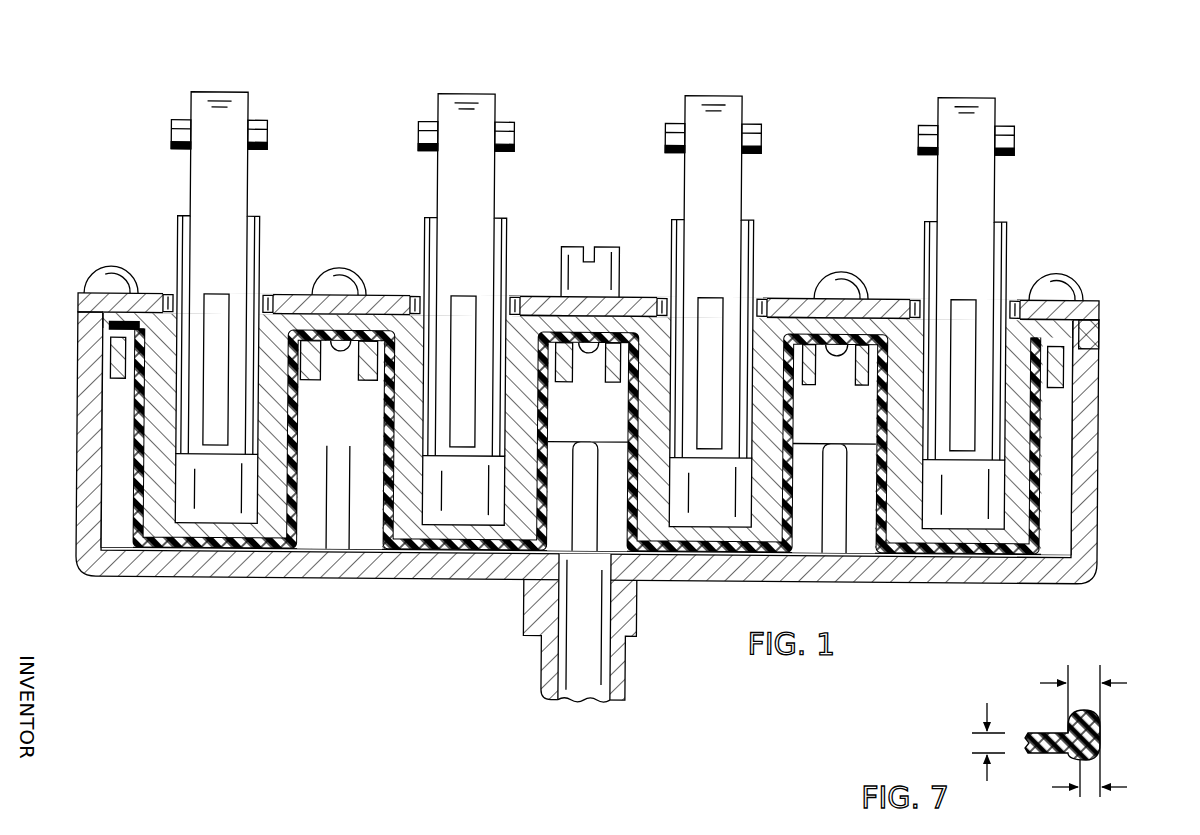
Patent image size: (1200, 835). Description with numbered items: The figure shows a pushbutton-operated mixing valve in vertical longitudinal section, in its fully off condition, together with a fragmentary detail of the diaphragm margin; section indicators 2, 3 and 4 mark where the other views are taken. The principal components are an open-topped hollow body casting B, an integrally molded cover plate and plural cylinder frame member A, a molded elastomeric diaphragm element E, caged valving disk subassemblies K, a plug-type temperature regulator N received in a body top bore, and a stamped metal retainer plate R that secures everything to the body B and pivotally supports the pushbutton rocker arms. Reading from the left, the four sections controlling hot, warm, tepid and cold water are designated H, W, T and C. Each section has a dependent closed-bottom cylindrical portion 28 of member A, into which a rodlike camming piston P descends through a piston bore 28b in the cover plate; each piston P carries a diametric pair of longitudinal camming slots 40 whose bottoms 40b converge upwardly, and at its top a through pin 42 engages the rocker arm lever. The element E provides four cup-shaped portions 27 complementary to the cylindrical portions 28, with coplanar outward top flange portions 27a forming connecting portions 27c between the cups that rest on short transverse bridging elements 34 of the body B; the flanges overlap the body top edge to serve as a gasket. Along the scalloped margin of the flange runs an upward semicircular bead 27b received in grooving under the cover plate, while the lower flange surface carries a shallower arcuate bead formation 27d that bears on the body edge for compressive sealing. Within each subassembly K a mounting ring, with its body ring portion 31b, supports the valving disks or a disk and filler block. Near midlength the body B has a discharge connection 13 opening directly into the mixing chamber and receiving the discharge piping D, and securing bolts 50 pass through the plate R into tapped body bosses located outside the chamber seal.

In FIG. 1, the cup-shaped diaphragm portion 27 is at (132, 572).
In FIG. 1, the outward top flange portion 27a is at (602, 290).
In FIG. 7, the outward top flange portion 27a is at (1040, 733).
In FIG. 1, the upward bead 27b is at (1100, 320).
In FIG. 7, the upward bead 27b is at (1090, 712).
In FIG. 1, the connecting portion 27c is at (1066, 350).
In FIG. 7, the arcuate bead formation 27d is at (1088, 762).
In FIG. 1, the cylindrical portion 28 is at (262, 548).
In FIG. 1, the piston bore 28b is at (228, 501).
In FIG. 1, the bridging element 34 is at (342, 354).
In FIG. 1, the camming slot 40 is at (220, 318).
In FIG. 1, the slot bottom 40b is at (954, 298).
In FIG. 1, the through pin 42 is at (172, 123).
In FIG. 1, the securing bolt 50 is at (336, 274).
In FIG. 1, the discharge connection 13 is at (639, 598).
In FIG. 1, the discharge piping D is at (629, 682).
In FIG. 1, the temperature regulator N is at (596, 243).
In FIG. 1, the camming piston P is at (248, 203).
In FIG. 1, the caged valving disk subassembly K is at (102, 361).
In FIG. 1, the body ring portion 31b is at (110, 382).
In FIG. 1, the cover plate and plural cylinder frame member A is at (1102, 311).
In FIG. 1, the hollow body casting B is at (1101, 407).
In FIG. 1, the elastomeric diaphragm element E is at (1048, 478).
In FIG. 1, the retainer plate R is at (867, 299).
In FIG. 1, the hot water section H is at (204, 62).
In FIG. 1, the warm water section W is at (444, 63).
In FIG. 1, the tepid water section T is at (699, 62).
In FIG. 1, the cold water section C is at (956, 59).
In FIG. 1, the section line 2- 2 is at (28, 389).
In FIG. 1, the section line 3- 3 is at (985, 80).
In FIG. 1, the section line 4- 4 is at (588, 170).